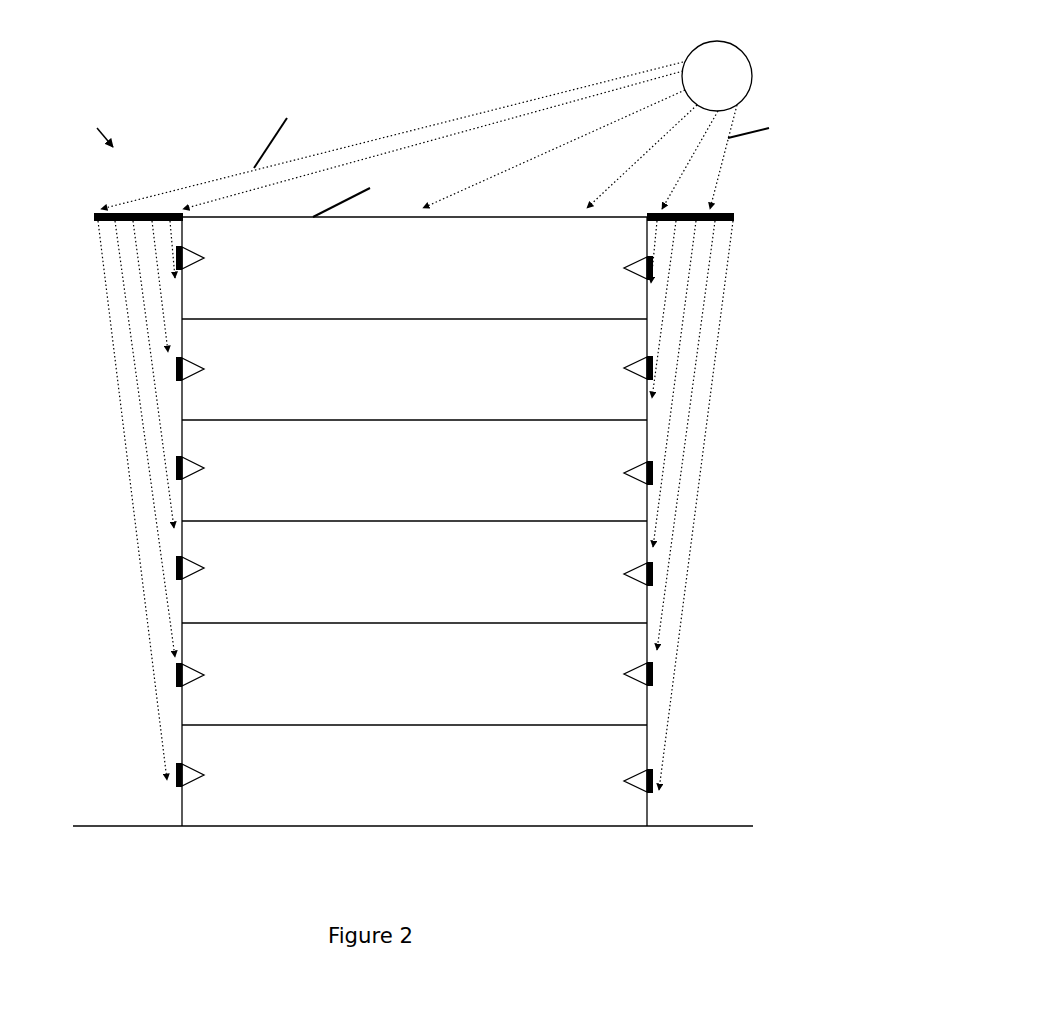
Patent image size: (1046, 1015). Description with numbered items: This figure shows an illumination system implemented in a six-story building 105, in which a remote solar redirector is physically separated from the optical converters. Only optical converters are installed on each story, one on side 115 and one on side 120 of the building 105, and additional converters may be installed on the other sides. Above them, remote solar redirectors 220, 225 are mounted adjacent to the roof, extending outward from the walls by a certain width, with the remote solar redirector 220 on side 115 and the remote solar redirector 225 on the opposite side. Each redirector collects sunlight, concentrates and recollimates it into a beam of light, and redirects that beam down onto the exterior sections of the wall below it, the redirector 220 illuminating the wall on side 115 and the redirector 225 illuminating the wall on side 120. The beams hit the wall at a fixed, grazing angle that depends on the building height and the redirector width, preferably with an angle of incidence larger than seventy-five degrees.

The building 105 is at (413, 521).
The side 115 is at (68, 197).
The side 120 is at (752, 193).
The remote solar redirector 220 is at (95, 217).
The remote solar redirector 225 is at (735, 221).